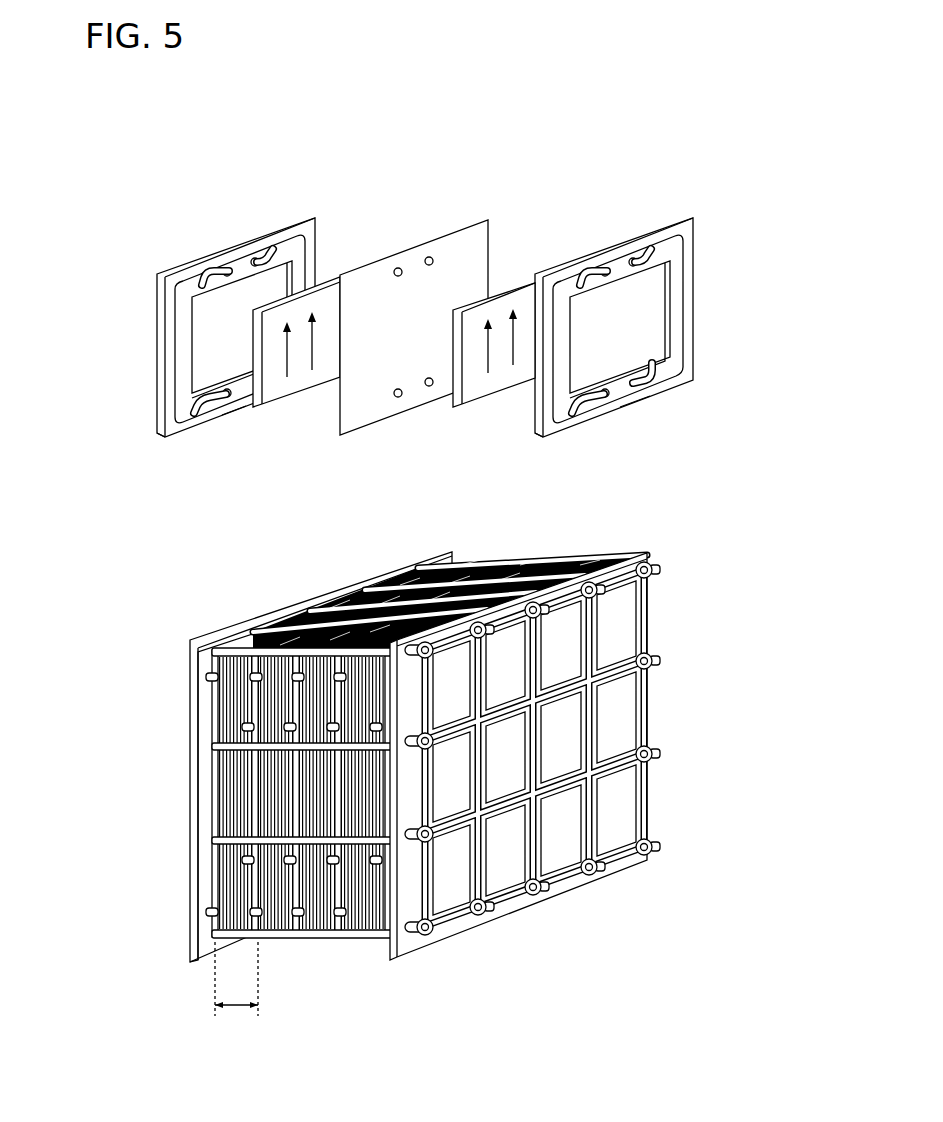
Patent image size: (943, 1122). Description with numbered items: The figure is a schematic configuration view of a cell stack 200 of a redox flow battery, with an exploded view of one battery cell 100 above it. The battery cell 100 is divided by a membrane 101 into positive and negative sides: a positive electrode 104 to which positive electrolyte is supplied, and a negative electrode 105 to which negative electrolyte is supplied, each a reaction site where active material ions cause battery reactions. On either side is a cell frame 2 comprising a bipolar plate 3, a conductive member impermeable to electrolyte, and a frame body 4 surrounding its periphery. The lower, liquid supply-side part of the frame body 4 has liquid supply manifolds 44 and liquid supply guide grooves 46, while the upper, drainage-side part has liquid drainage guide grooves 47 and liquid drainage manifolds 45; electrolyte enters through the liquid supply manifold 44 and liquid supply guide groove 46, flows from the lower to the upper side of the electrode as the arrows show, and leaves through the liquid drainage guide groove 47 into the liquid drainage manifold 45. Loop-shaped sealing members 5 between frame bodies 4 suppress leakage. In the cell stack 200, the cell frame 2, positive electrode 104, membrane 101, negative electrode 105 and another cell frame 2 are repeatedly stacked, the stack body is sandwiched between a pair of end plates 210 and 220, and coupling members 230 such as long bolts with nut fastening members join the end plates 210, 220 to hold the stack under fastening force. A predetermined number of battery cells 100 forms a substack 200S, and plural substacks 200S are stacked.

The battery cell 100 is at (430, 329).
The membrane 101 is at (440, 227).
The positive electrode 104 is at (300, 394).
The negative electrode 105 is at (480, 378).
The cell frame 2 is at (430, 305).
The bipolar plate 3 is at (214, 346).
The frame body 4 is at (168, 320).
The sealing member 5 is at (306, 234).
The liquid supply manifold 44 is at (232, 408).
The liquid drainage manifold 45 is at (226, 267).
The liquid supply guide groove 46 is at (192, 416).
The liquid drainage guide groove 47 is at (203, 281).
The cell stack 200 is at (434, 798).
The end plate 210 is at (567, 815).
The end plate 220 is at (190, 665).
The coupling member 230 is at (258, 630).
The substack 200S is at (235, 1000).